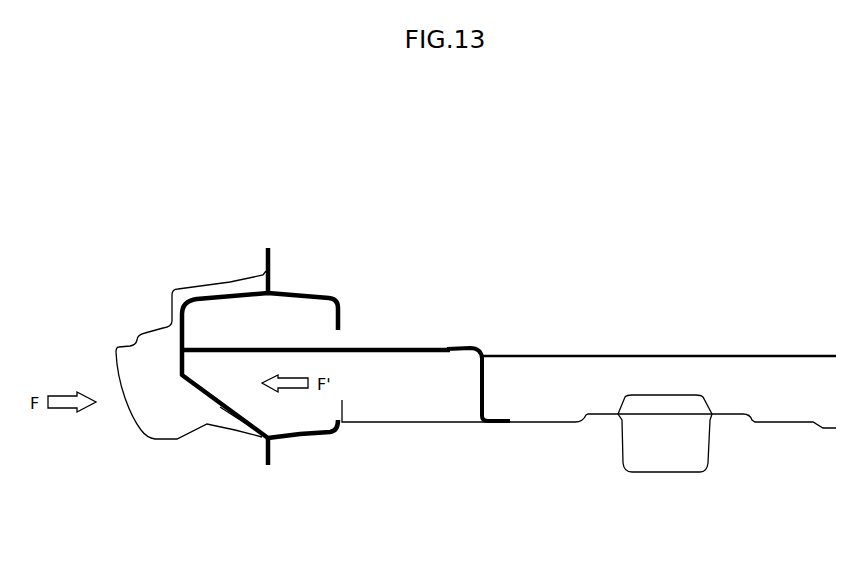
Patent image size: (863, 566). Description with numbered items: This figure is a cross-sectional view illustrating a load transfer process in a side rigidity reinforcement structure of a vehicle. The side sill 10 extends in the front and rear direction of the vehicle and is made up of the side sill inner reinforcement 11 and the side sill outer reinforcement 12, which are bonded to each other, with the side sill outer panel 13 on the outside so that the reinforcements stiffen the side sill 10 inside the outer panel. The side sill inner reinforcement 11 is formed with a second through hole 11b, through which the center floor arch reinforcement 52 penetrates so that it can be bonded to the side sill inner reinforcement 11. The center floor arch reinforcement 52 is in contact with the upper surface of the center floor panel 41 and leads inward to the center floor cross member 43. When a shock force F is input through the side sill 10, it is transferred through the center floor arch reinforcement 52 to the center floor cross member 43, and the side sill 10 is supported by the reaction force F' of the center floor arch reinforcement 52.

The side sill 10 is at (282, 400).
The side sill inner reinforcement 11 is at (303, 436).
The second through hole 11b is at (362, 368).
The side sill outer reinforcement 12 is at (220, 409).
The side sill outer panel 13 is at (132, 423).
The center floor panel 41 is at (450, 424).
The center floor cross member 43 is at (606, 355).
The center floor arch reinforcement 52 is at (418, 347).